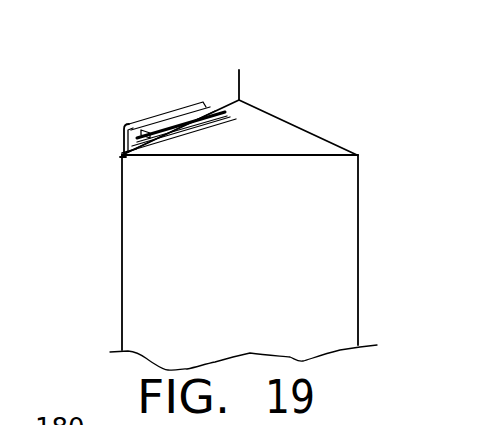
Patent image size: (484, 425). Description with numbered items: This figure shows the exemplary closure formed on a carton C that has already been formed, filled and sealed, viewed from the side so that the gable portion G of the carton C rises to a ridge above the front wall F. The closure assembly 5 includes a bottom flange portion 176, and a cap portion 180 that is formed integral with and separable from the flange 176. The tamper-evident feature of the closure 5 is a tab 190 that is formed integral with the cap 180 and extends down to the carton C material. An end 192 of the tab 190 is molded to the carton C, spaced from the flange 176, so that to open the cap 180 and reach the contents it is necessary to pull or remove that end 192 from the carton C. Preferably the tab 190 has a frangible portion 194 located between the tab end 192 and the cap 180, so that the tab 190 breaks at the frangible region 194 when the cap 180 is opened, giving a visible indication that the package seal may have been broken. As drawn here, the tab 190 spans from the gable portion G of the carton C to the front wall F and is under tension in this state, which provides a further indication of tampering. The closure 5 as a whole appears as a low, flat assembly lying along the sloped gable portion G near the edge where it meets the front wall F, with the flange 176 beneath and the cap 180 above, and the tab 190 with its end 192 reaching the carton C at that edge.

The solar panel assembly 5 is at (151, 98).
The bottom flange portion 176 is at (185, 128).
The cap portion 180 is at (183, 108).
The tab 190 is at (123, 128).
The end of the tab 192 is at (122, 157).
The frangible portion 194 is at (122, 155).
The carton C is at (291, 99).
The front wall F is at (123, 272).
The gable portion G is at (234, 99).